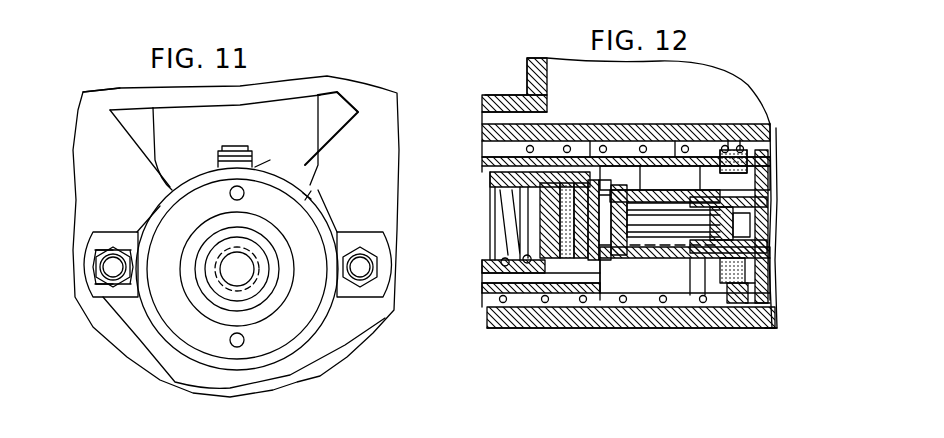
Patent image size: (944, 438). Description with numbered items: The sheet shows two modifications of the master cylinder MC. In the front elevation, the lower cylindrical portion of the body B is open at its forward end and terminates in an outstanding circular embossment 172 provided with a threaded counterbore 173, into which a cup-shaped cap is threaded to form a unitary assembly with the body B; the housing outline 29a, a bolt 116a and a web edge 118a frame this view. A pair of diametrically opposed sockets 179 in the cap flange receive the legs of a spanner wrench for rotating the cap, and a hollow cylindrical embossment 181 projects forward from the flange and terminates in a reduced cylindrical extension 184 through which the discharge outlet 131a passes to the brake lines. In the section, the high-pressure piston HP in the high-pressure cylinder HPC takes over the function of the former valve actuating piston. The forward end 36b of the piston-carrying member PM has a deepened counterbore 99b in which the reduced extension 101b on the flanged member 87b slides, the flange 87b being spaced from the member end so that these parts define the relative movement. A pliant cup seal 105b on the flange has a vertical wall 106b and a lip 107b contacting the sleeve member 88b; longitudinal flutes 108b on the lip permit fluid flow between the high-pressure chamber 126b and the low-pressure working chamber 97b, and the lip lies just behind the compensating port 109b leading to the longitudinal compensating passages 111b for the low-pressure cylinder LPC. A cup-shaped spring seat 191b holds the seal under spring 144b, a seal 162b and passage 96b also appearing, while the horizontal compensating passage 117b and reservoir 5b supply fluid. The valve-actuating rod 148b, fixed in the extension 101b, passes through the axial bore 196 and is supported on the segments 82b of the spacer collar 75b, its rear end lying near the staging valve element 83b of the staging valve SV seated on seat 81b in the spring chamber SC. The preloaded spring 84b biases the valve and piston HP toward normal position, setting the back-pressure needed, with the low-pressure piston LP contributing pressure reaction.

In FIG. 11, the housing 29a is at (142, 127).
In FIG. 11, the master cylinder MC is at (155, 172).
In FIG. 12, the master cylinder MC is at (773, 343).
In FIG. 11, the bolt 116a is at (237, 150).
In FIG. 11, the web edge 118a is at (255, 165).
In FIG. 11, the master cylinder body B is at (307, 195).
In FIG. 12, the master cylinder body B is at (775, 128).
In FIG. 11, the circular embossment 172 is at (310, 198).
In FIG. 11, the threaded counterbore 173 is at (165, 217).
In FIG. 11, the reduced cylindrical extension 184 is at (270, 240).
In FIG. 11, the hollow cylindrical embossment 181 is at (293, 277).
In FIG. 11, the sockets 179 is at (245, 340).
In FIG. 11, the discharge outlet 131a is at (227, 283).
In FIG. 12, the reservoir 5b is at (717, 73).
In FIG. 12, the horizontal compensating passage 117b is at (507, 113).
In FIG. 12, the high-pressure cylinder HPC is at (482, 157).
In FIG. 12, the longitudinal flutes 108b is at (592, 142).
In FIG. 12, the flanged member 87b is at (605, 150).
In FIG. 12, the pliant cup seal 105b is at (626, 149).
In FIG. 12, the passage 96b is at (677, 126).
In FIG. 12, the spring chamber SC is at (766, 165).
In FIG. 12, the staging valve SV is at (768, 185).
In FIG. 12, the staging valve-forming element 83b is at (753, 222).
In FIG. 12, the preloaded spring 84b is at (770, 237).
In FIG. 12, the low-pressure piston LP is at (770, 295).
In FIG. 12, the high-pressure piston HP is at (540, 262).
In FIG. 12, the cup-shaped spring seat 191b is at (522, 176).
In FIG. 12, the spring 144b is at (527, 230).
In FIG. 12, the high-pressure chamber 126b is at (523, 240).
In FIG. 12, the seal 162b is at (523, 300).
In FIG. 12, the vertical wall 106b is at (553, 292).
In FIG. 12, the lip 107b is at (542, 300).
In FIG. 12, the compensating port 109b is at (508, 300).
In FIG. 12, the piston-carrying member PM is at (678, 209).
In FIG. 12, the axial bore 196 is at (645, 218).
In FIG. 12, the counterbore 99b is at (627, 190).
In FIG. 12, the forward end 36b is at (662, 187).
In FIG. 12, the valve-actuating rod 148b is at (723, 198).
In FIG. 12, the reduced extension 101b is at (645, 292).
In FIG. 12, the longitudinal compensating passages 111b is at (685, 279).
In FIG. 12, the spacer collar 75b is at (689, 276).
In FIG. 12, the segments 82b is at (689, 278).
In FIG. 12, the valve seat 81b is at (730, 282).
In FIG. 12, the low-pressure cylinder LPC is at (753, 320).
In FIG. 12, the low-pressure working chamber 97b is at (685, 330).
In FIG. 12, the sleeve member 88b is at (598, 300).